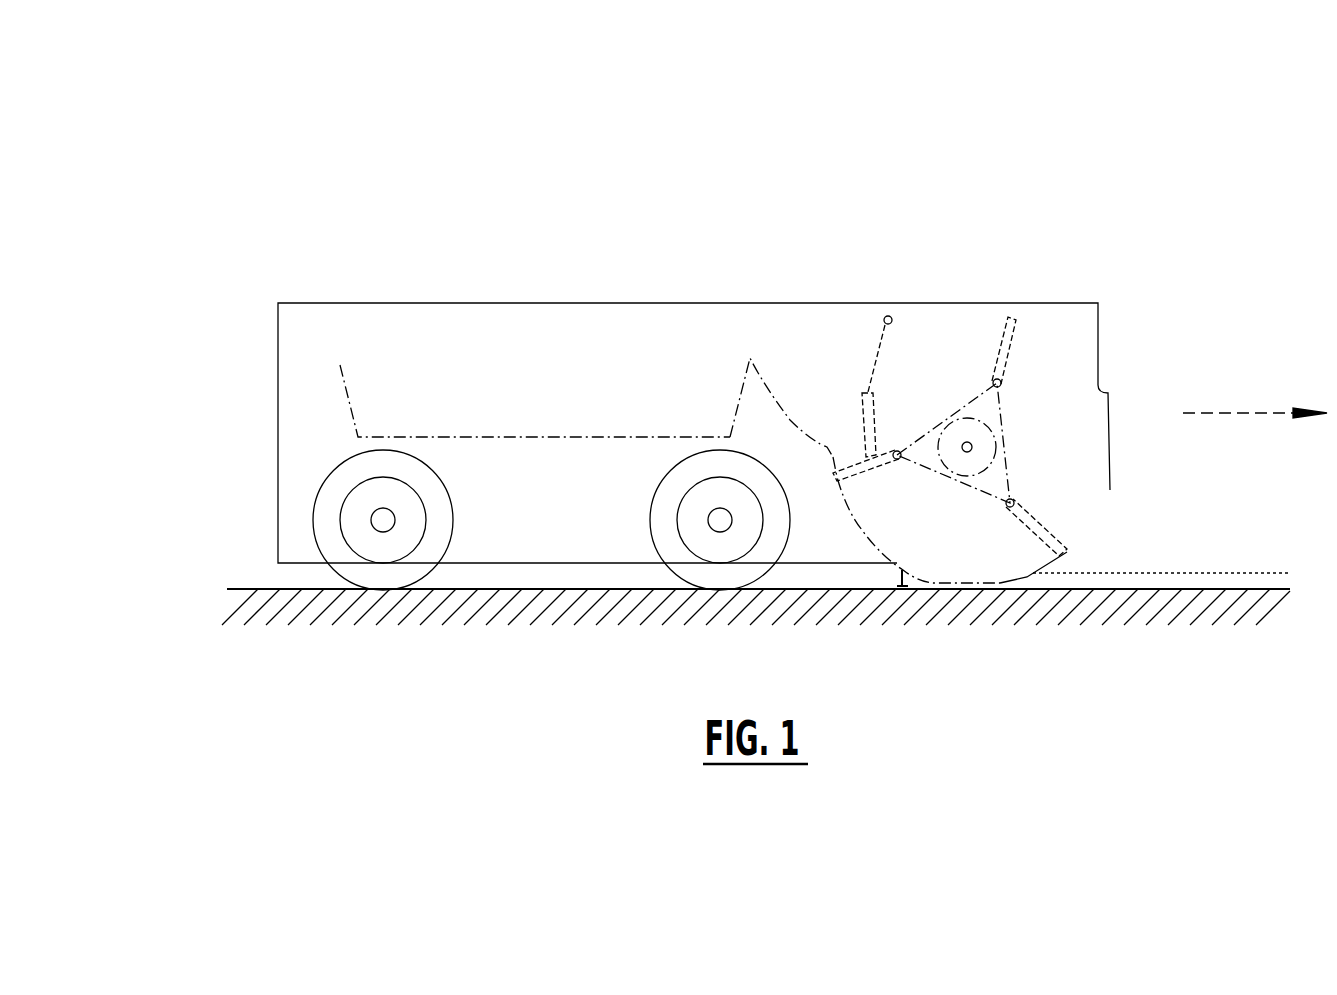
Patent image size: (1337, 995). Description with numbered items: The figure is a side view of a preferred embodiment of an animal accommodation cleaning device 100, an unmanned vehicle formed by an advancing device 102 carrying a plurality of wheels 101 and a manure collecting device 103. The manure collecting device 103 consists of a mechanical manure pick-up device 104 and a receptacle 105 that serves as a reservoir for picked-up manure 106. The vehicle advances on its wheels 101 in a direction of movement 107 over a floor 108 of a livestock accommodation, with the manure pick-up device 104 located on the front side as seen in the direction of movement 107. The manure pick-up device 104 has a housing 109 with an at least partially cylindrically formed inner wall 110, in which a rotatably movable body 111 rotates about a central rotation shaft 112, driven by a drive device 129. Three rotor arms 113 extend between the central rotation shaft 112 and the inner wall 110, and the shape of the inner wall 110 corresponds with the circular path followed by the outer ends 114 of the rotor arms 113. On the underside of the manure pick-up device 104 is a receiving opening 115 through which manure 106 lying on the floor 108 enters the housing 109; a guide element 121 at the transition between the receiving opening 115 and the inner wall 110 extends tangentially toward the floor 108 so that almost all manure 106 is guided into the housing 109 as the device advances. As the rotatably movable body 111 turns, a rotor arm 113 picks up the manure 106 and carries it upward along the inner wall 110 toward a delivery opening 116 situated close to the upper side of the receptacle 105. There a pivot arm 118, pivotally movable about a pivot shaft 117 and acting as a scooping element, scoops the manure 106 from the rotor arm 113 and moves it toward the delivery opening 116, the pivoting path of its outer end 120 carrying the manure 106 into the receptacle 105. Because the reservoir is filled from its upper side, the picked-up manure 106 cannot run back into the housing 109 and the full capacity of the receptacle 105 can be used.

The animal accommodation cleaning device 100 is at (977, 150).
The wheels 101 is at (327, 523).
The advancing device 102 is at (223, 430).
The manure collecting device 103 is at (662, 215).
The manure pick-up device 104 is at (803, 312).
The receptacle 105 is at (597, 316).
The manure 106 is at (1222, 580).
The direction of movement 107 is at (1225, 413).
The floor 108 is at (218, 560).
The housing 109 is at (1050, 368).
The inner wall 110 is at (910, 525).
The rotatably movable body 111 is at (963, 392).
The central rotation shaft 112 is at (973, 447).
The rotor arms 113 is at (1007, 343).
The outer ends 114 is at (1014, 282).
The receiving opening 115 is at (991, 620).
The delivery opening 116 is at (700, 342).
The pivot shaft 117 is at (888, 316).
The pivot arm 118 is at (862, 413).
The outer end 120 is at (897, 420).
The guide element 121 is at (912, 580).
The drive device 129 is at (978, 432).